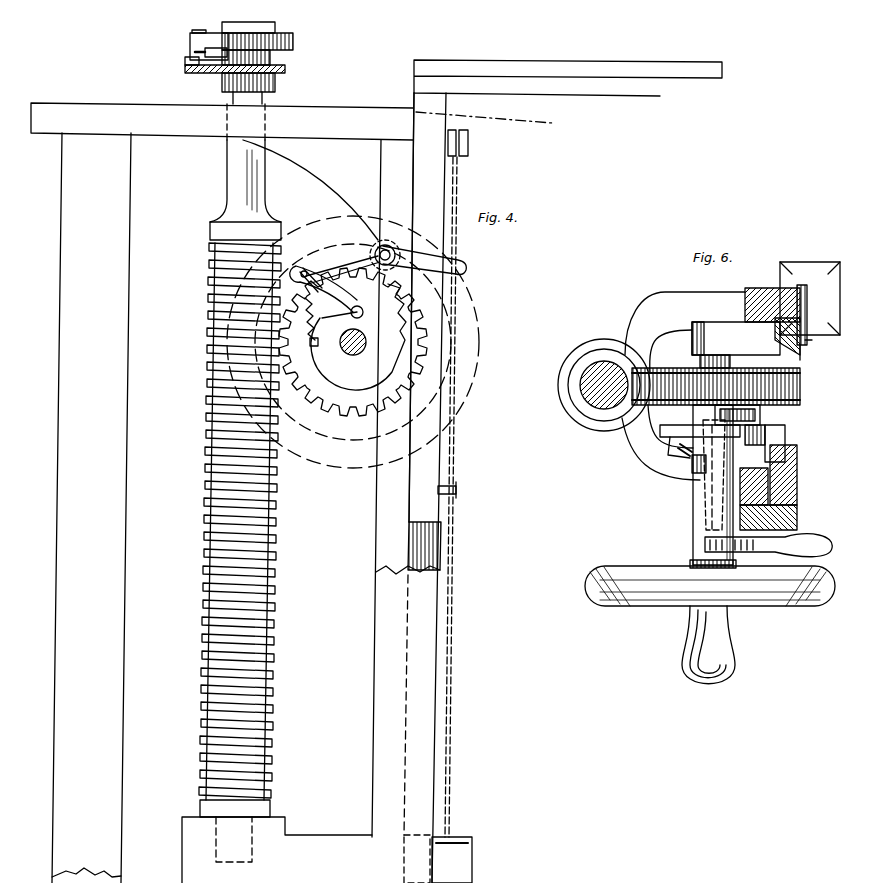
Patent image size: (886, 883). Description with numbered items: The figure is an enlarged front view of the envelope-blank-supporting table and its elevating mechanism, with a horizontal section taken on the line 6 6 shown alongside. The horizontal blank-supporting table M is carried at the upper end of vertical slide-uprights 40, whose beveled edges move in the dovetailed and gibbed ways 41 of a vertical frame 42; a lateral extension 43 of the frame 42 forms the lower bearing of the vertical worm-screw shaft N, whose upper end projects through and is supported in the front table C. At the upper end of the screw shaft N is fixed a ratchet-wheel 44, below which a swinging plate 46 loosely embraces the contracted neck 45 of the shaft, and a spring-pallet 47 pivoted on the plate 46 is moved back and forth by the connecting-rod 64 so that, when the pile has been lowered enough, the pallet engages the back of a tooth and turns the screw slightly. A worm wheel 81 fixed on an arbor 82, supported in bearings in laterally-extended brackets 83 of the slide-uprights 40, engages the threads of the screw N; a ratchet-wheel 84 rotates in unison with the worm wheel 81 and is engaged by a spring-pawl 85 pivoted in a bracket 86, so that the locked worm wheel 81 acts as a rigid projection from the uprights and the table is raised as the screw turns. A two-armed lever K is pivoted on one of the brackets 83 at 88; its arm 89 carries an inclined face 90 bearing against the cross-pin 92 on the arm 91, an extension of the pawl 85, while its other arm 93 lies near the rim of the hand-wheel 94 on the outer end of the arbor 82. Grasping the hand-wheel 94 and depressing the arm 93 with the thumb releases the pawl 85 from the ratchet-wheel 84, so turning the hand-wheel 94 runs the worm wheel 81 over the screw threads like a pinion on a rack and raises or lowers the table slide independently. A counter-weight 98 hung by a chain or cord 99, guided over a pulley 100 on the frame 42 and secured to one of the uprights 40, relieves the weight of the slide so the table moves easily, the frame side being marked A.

In FIG. 4, the section line 6 is at (210, 234).
In FIG. 4, the vertical slide-uprights 40 is at (414, 488).
In FIG. 6, the vertical slide-uprights 40 is at (786, 345).
In FIG. 4, the dovetailed and gibbed ways 41 is at (425, 547).
In FIG. 6, the dovetailed and gibbed ways 41 is at (808, 470).
In FIG. 4, the vertical frame 42 is at (397, 359).
In FIG. 6, the vertical frame 42 is at (808, 519).
In FIG. 4, the lateral extension 43 is at (277, 850).
In FIG. 4, the ratchet-wheel 44 is at (271, 43).
In FIG. 4, the contracted neck 45 is at (230, 80).
In FIG. 4, the swinging plate 46 is at (185, 69).
In FIG. 4, the spring-pallet 47 is at (196, 45).
In FIG. 4, the connecting-rod 64 is at (221, 56).
In FIG. 4, the worm wheel 81 is at (340, 418).
In FIG. 4, the arbor 82 is at (366, 341).
In FIG. 6, the arbor 82 is at (682, 372).
In FIG. 4, the laterally-extended brackets 83 is at (358, 337).
In FIG. 6, the laterally-extended brackets 83 is at (686, 472).
In FIG. 4, the ratchet-wheel 84 is at (353, 342).
In FIG. 6, the ratchet-wheel 84 is at (668, 408).
In FIG. 4, the spring-pawl 85 is at (345, 270).
In FIG. 6, the spring-pawl 85 is at (737, 415).
In FIG. 4, the bracket 86 is at (389, 250).
In FIG. 6, the bracket 86 is at (771, 443).
In FIG. 4, the pivot 88 is at (348, 320).
In FIG. 6, the pivot 88 is at (712, 482).
In FIG. 4, the lever arm 89 is at (339, 304).
In FIG. 6, the lever arm 89 is at (667, 456).
In FIG. 4, the inclined face 90 is at (300, 307).
In FIG. 4, the pawl arm 91 is at (328, 272).
In FIG. 6, the pawl arm 91 is at (697, 430).
In FIG. 4, the cross-pin 92 is at (316, 278).
In FIG. 6, the cross-pin 92 is at (660, 470).
In FIG. 4, the lever arm 93 is at (424, 260).
In FIG. 6, the lever arm 93 is at (768, 545).
In FIG. 4, the hand-wheel 94 is at (360, 466).
In FIG. 6, the hand-wheel 94 is at (710, 625).
In FIG. 4, the counter-weight 98 is at (438, 859).
In FIG. 6, the counter-weight 98 is at (810, 298).
In FIG. 4, the chain or cord 99 is at (450, 610).
In FIG. 6, the chain or cord 99 is at (808, 332).
In FIG. 4, the pulley 100 is at (474, 143).
In FIG. 6, the pulley 100 is at (822, 315).
In FIG. 4, the frame A is at (91, 508).
In FIG. 4, the front table C is at (222, 121).
In FIG. 4, the horizontal blank-supporting table M is at (581, 78).
In FIG. 4, the vertical worm-screw shaft N is at (175, 477).
In FIG. 6, the vertical worm-screw shaft N is at (590, 410).
In FIG. 4, the two-armed lever K is at (346, 289).